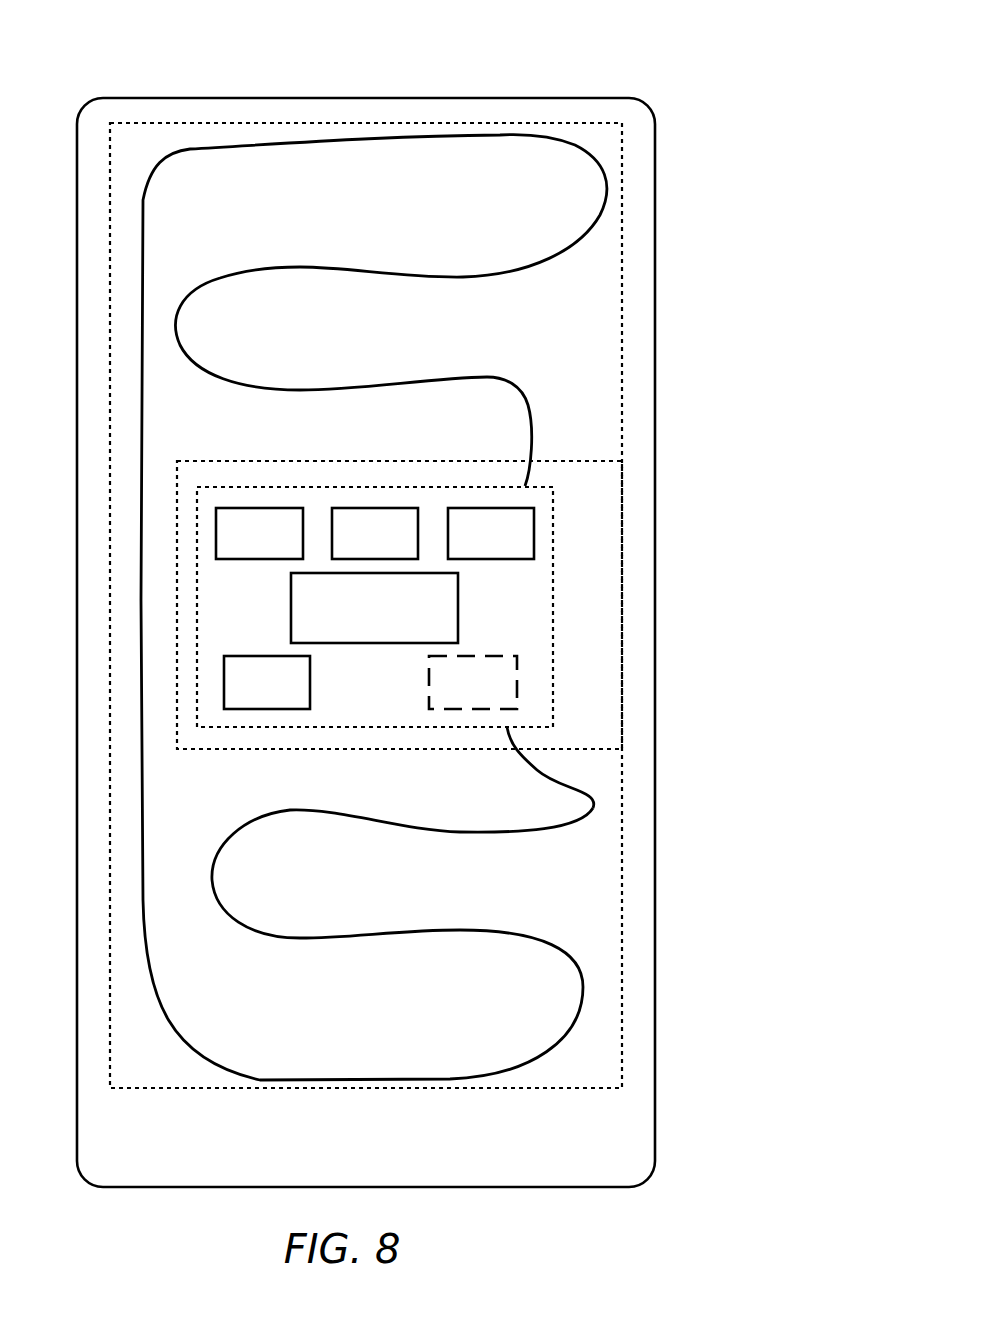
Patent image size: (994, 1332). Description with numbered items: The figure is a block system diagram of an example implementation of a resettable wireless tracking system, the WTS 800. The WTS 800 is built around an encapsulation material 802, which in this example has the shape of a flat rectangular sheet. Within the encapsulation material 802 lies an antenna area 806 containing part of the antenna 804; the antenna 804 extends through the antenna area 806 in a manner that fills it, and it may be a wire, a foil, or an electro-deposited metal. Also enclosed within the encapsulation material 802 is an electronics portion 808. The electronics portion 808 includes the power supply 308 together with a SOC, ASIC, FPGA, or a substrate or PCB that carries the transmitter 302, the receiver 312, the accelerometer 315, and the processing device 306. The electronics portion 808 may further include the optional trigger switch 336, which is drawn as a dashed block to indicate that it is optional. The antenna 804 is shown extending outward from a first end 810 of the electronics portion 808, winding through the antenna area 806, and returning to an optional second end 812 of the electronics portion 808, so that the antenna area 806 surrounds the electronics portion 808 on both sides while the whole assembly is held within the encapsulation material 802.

The WTS 800 is at (645, 65).
The encapsulation material 802 is at (366, 642).
The antenna 804 is at (590, 230).
The antenna area 806 is at (366, 605).
The electronics portion 808 is at (375, 607).
The first end 810 is at (528, 468).
The second end 812 is at (510, 737).
The transmitter 302 is at (259, 533).
The processing device 306 is at (375, 533).
The power supply 308 is at (491, 533).
The receiver 312 is at (267, 682).
The accelerometer 315 is at (374, 608).
The trigger switch 336 is at (473, 682).